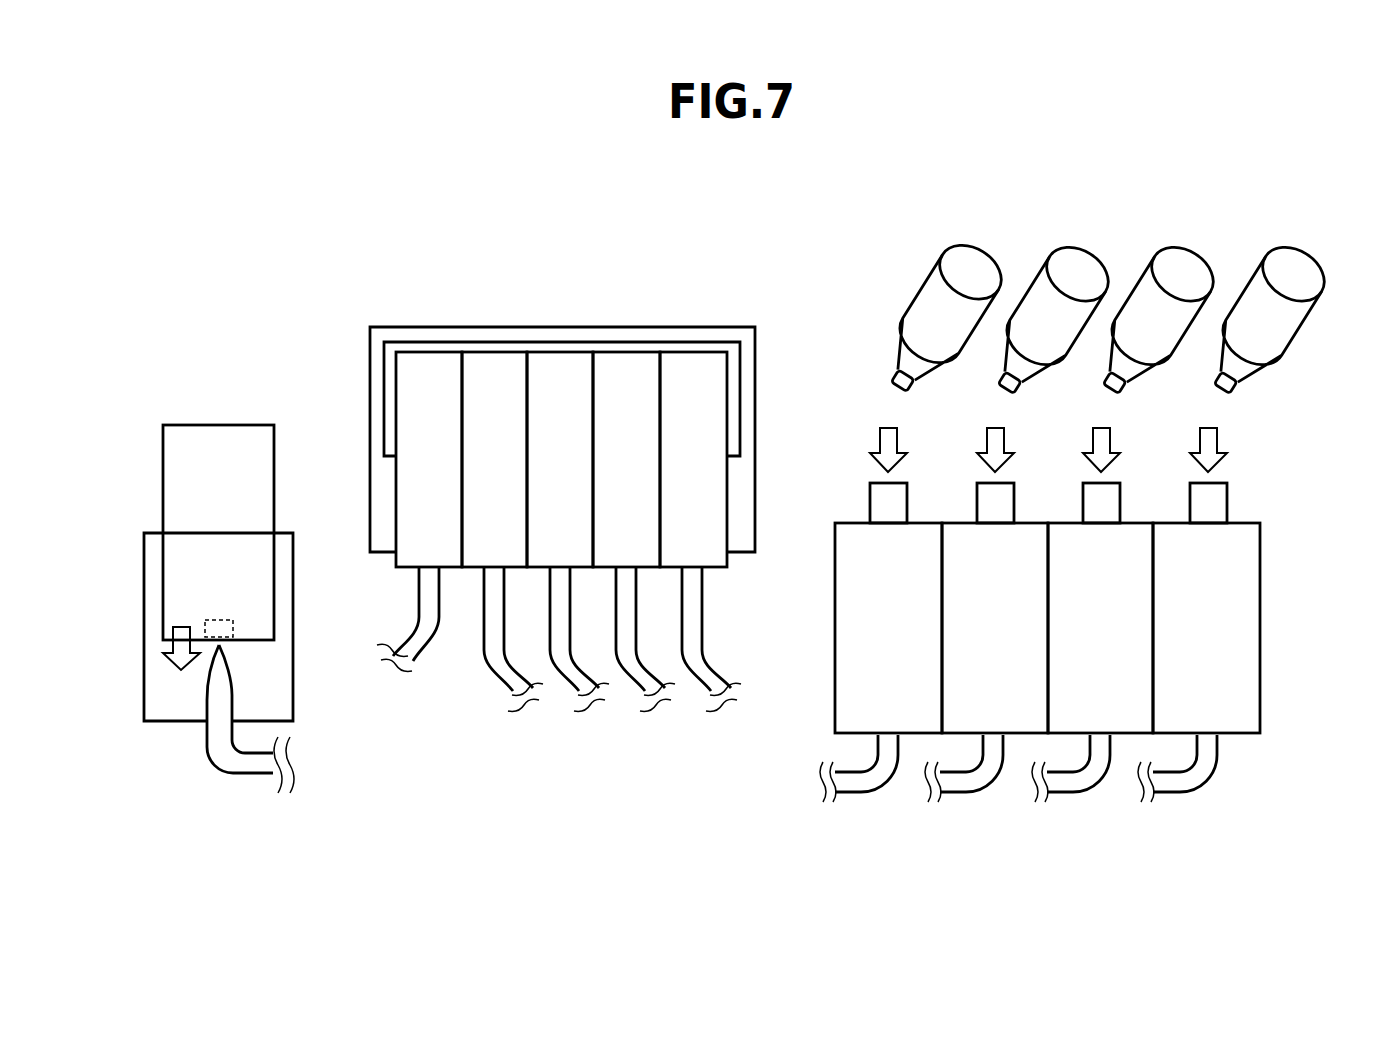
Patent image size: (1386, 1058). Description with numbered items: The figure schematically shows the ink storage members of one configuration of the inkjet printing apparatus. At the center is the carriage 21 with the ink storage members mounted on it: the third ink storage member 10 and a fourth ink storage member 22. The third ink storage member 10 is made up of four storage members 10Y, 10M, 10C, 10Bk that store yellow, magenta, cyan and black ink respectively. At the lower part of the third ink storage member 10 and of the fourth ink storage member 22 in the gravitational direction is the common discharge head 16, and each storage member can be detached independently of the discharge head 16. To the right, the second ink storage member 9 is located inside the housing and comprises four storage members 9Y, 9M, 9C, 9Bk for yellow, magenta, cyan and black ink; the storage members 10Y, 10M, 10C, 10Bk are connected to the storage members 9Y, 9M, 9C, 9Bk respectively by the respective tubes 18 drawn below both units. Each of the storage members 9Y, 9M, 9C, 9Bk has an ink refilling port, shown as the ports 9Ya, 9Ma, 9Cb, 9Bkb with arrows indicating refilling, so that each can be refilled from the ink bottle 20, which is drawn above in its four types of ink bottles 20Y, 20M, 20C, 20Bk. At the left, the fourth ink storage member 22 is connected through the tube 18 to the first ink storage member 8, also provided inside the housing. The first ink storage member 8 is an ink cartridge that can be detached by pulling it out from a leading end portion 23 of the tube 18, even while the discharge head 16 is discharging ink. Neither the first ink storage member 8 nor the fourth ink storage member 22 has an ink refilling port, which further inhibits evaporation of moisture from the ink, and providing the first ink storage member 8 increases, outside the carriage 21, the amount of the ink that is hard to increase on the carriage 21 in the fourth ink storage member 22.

The first ink storage member 8 is at (218, 440).
The second ink storage member 9 is at (1097, 580).
The storage member 9Y is at (897, 678).
The storage member 9M is at (1007, 602).
The storage member 9C is at (1113, 567).
The storage member 9Bk is at (1207, 553).
The ink refilling port 9Ya is at (868, 508).
The ink refilling port 9Ma is at (975, 508).
The cyan toner receiving port 9Cb is at (1082, 508).
The black toner receiving port 9Bkb is at (1188, 508).
The third ink storage member 10 is at (577, 395).
The storage member 10Y is at (497, 350).
The storage member 10M is at (572, 350).
The storage member 10C is at (643, 350).
The storage member 10Bk is at (673, 423).
The discharge head 16 is at (398, 338).
The tube 18 is at (235, 775).
The ink bottle 20 is at (1102, 263).
The ink bottle 20Y is at (977, 253).
The ink bottle 20M is at (1080, 253).
The ink bottle 20C is at (1173, 253).
The ink bottle 20Bk is at (1264, 295).
The carriage 21 is at (370, 377).
The fourth ink storage member 22 is at (433, 350).
The leading end portion 23 is at (208, 700).